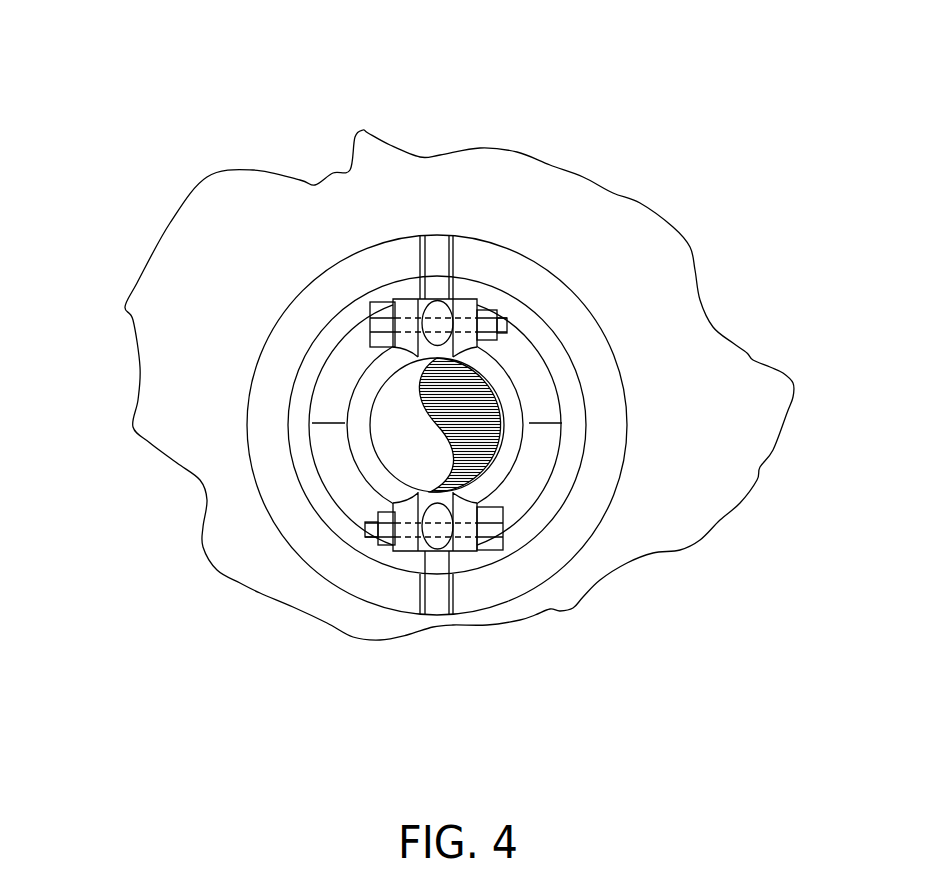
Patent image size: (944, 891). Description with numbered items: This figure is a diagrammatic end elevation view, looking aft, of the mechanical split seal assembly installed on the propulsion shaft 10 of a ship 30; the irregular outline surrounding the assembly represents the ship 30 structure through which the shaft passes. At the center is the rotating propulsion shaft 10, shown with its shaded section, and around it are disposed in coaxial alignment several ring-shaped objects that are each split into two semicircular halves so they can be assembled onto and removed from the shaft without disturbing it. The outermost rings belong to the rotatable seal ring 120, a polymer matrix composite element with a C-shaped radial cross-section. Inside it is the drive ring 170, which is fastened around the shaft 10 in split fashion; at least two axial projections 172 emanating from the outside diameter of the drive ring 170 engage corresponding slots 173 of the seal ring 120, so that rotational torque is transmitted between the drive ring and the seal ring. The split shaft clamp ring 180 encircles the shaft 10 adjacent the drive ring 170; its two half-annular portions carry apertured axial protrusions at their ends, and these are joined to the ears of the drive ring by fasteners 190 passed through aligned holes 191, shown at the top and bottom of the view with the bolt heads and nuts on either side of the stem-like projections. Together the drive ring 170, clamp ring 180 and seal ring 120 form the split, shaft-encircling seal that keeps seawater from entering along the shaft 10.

The propulsion shaft 10 is at (400, 412).
The ship 30 is at (575, 252).
The seal ring 120 is at (270, 437).
The drive ring 170 is at (530, 343).
The axial projections 172 is at (440, 273).
The slots 173 is at (437, 585).
The split shaft clamp ring 180 is at (515, 408).
The fasteners 190 is at (370, 298).
The aligned holes 191 is at (407, 318).